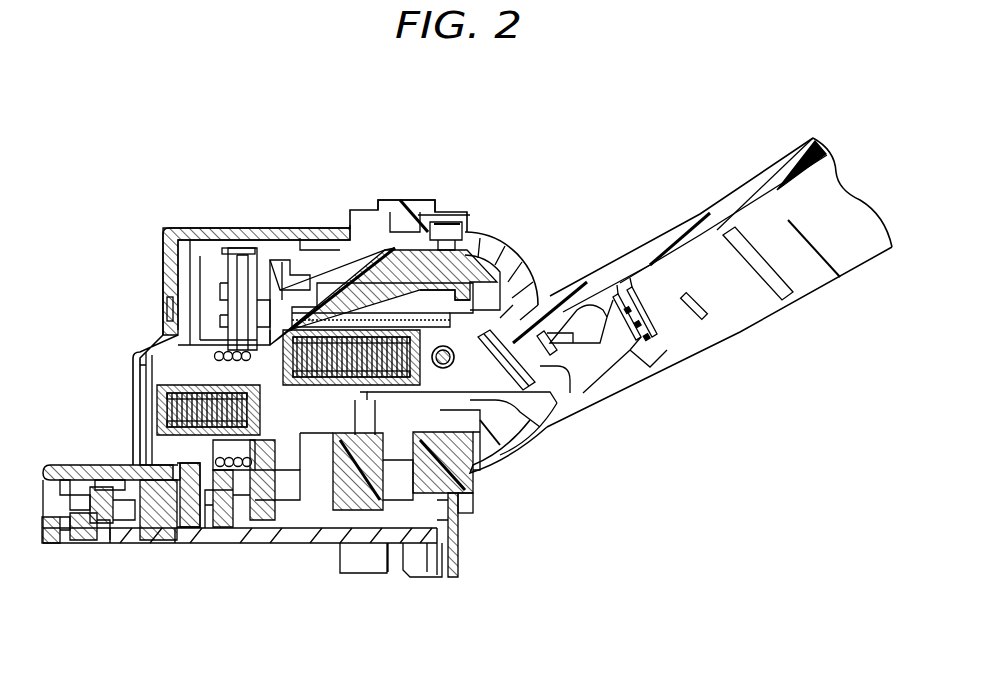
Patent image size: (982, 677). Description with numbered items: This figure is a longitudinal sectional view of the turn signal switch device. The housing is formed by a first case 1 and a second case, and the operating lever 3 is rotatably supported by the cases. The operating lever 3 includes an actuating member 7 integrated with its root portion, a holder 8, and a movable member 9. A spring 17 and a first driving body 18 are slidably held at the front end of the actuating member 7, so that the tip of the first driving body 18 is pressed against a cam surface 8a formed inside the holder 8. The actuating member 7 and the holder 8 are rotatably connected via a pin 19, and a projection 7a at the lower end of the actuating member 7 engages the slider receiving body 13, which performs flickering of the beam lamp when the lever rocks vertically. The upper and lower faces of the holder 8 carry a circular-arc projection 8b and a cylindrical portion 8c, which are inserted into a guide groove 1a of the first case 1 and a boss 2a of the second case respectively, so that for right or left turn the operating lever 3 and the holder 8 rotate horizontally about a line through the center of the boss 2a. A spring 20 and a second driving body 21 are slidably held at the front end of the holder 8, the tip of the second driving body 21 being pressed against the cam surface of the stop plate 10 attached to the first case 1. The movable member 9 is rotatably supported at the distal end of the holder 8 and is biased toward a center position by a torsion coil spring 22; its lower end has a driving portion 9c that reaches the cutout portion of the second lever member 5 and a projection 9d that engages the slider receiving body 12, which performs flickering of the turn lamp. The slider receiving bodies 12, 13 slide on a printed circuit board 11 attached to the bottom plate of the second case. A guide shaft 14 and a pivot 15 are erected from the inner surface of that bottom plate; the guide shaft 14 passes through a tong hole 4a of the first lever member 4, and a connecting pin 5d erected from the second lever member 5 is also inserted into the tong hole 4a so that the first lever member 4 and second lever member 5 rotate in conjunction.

The first case 1 is at (188, 228).
The guide groove 1a is at (400, 200).
The boss 2a is at (460, 514).
The operating lever 3 is at (745, 185).
The first lever member 4 is at (42, 490).
The tong hole 4a is at (94, 500).
The second lever member 5 is at (70, 522).
The connecting pin 5d is at (73, 470).
The actuating member 7 is at (538, 412).
The projection 7a is at (395, 425).
The holder 8 is at (360, 240).
The cam surface 8a is at (290, 280).
The circular-arc projection 8b is at (424, 212).
The cylindrical portion 8c is at (472, 470).
The movable member 9 is at (232, 292).
The driving portion 9c is at (285, 512).
The projection 9d is at (236, 500).
The stop plate 10 is at (133, 362).
The printed circuit board 11 is at (295, 537).
The slider receiving body 12 is at (232, 528).
The slider receiving body 13 is at (372, 507).
The guide shaft 14 is at (146, 512).
The pivot 15 is at (208, 472).
The spring 17 is at (345, 335).
The first driving body 18 is at (277, 340).
The pin 19 is at (548, 292).
The spring 20 is at (146, 372).
The second driving body 21 is at (138, 388).
The torsion coil spring 22 is at (215, 350).